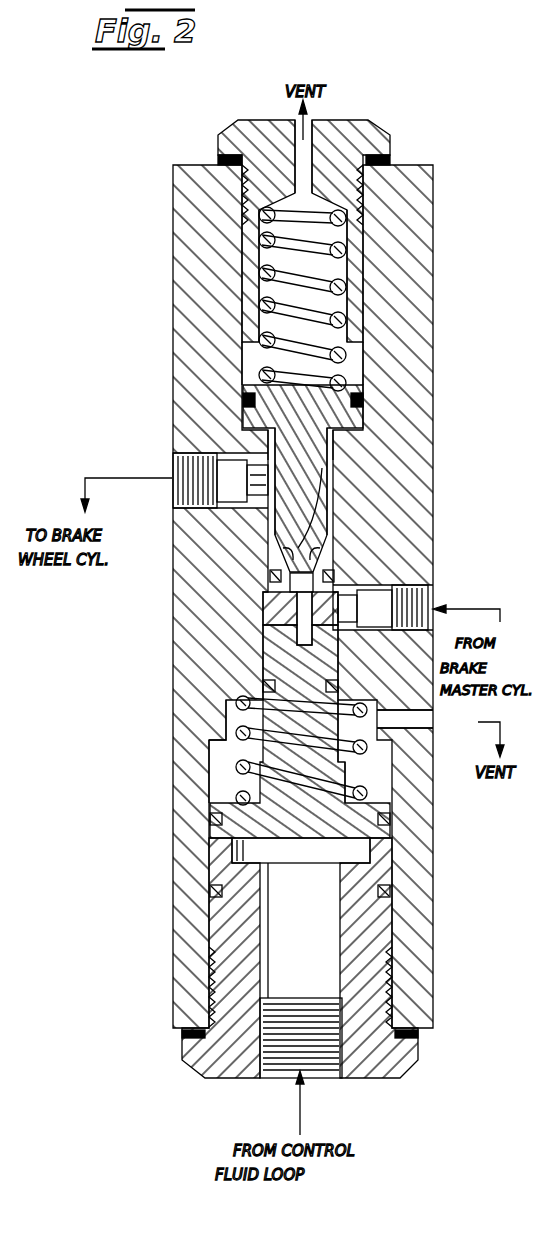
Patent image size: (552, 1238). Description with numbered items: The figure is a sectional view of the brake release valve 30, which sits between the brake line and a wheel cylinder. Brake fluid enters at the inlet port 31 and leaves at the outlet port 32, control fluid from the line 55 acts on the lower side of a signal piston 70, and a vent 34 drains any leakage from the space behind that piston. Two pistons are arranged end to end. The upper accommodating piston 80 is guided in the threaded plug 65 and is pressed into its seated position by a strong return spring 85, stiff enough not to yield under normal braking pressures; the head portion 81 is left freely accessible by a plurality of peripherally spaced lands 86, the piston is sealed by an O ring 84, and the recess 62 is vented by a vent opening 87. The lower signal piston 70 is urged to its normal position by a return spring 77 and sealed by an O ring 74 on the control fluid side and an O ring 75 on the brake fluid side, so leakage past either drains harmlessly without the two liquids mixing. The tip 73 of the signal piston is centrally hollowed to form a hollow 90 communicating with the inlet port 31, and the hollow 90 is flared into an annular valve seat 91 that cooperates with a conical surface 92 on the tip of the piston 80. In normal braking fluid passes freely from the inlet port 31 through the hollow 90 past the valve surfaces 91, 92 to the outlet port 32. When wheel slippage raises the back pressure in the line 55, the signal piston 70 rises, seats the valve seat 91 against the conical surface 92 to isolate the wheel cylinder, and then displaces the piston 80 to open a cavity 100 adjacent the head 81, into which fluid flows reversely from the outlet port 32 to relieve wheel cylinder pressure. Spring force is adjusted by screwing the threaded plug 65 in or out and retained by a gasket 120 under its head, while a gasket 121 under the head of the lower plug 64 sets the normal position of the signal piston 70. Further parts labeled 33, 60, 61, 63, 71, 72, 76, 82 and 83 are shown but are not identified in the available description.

The brake release valve 30 is at (438, 518).
The inlet port 31 is at (432, 586).
The outlet port 32 is at (172, 466).
The control fluid port fitting 33 is at (290, 1073).
The vent 34 is at (423, 721).
The line 55 is at (298, 1124).
The lower body portion 60 is at (172, 740).
The spring chamber 61 is at (220, 783).
The recess 62 is at (258, 292).
The guide bushing 63 is at (340, 624).
The plug 64 is at (190, 1073).
The threaded plug 65 is at (228, 133).
The signal piston 70 is at (346, 776).
The disc 71 is at (207, 840).
The lower piston 72 is at (262, 660).
The tip 73 is at (332, 563).
The O ring 74 is at (393, 840).
The O ring 75 is at (340, 683).
The seal 76 is at (270, 576).
The return spring 77 is at (238, 731).
The accommodating piston 80 is at (331, 395).
The head portion 81 is at (248, 417).
The piston stem 82 is at (318, 488).
The tapered valve portion 83 is at (300, 545).
The O ring 84 is at (364, 401).
The return spring 85 is at (346, 318).
The lands 86 is at (334, 450).
The vent opening 87 is at (316, 133).
The hollow 90 is at (298, 615).
The annular valve seat 91 is at (278, 543).
The conical surface 92 is at (330, 542).
The cavity 100 is at (270, 433).
The gasket 120 is at (390, 153).
The gasket 121 is at (418, 1038).